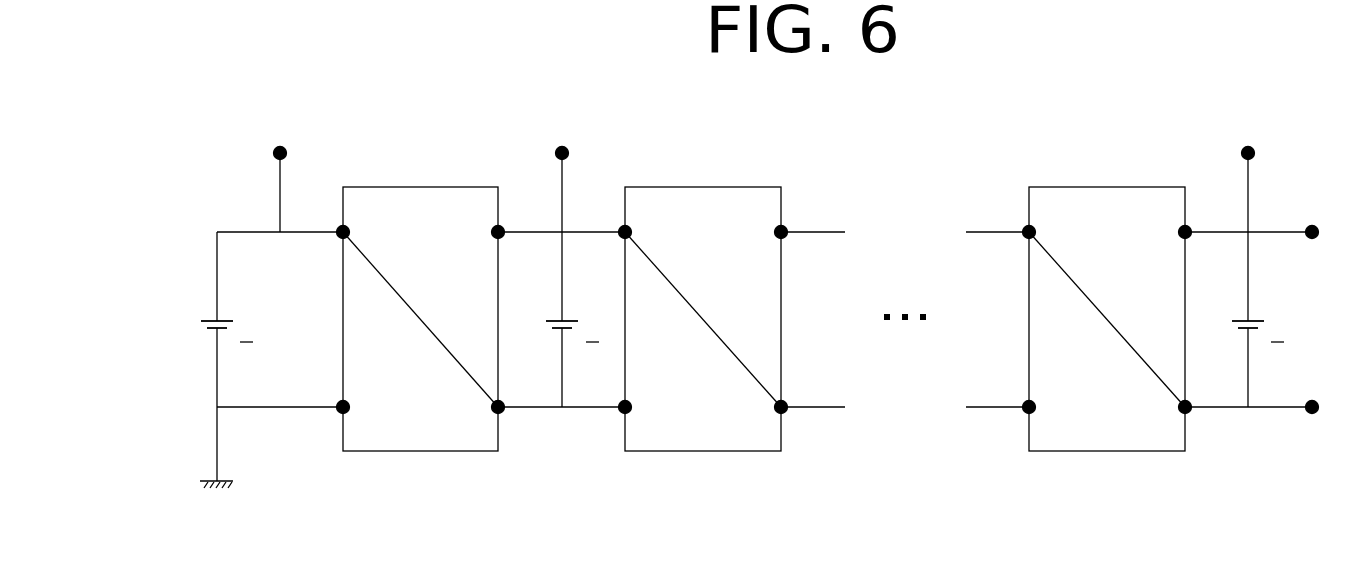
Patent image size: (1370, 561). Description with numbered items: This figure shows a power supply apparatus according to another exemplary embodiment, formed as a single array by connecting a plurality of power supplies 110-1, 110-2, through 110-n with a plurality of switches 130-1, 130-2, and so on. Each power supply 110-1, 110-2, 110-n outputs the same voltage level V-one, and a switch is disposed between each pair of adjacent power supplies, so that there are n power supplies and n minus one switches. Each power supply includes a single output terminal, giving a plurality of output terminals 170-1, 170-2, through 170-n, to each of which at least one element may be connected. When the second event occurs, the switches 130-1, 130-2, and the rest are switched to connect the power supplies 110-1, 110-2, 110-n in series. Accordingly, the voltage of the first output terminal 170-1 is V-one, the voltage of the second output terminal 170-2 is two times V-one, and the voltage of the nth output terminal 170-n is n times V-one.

The power supply 110-1 is at (204, 324).
The power supply 110-2 is at (549, 324).
The power supply 110-n is at (1234, 324).
The switch 130-1 is at (420, 451).
The switch 130-2 is at (703, 451).
The first output terminal 170-1 is at (286, 153).
The second output terminal 170-2 is at (568, 153).
The nth output terminal 170-n is at (1254, 153).